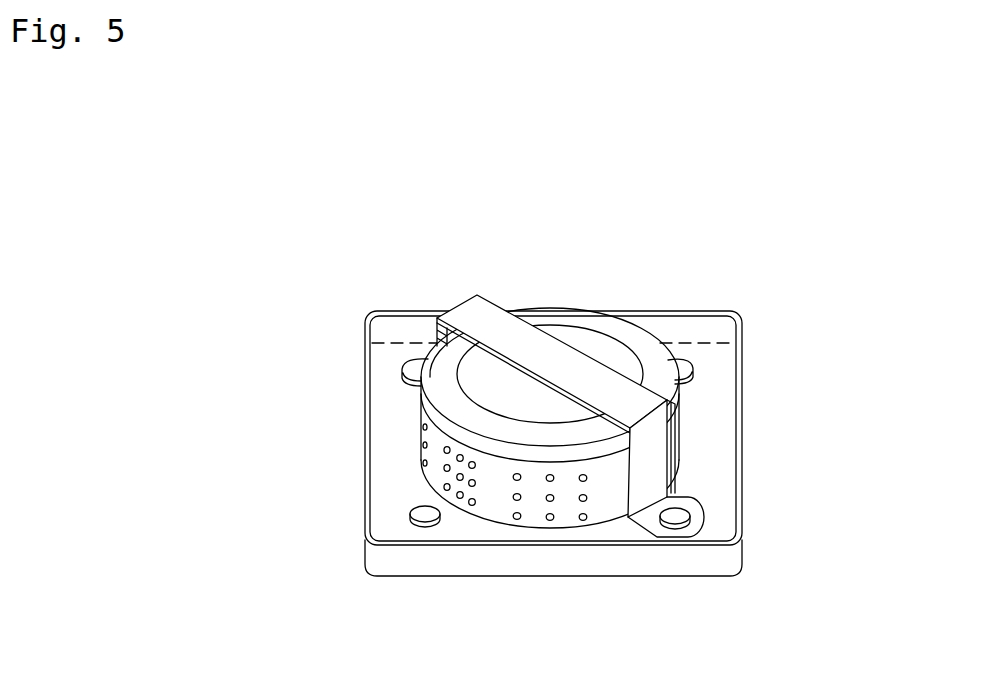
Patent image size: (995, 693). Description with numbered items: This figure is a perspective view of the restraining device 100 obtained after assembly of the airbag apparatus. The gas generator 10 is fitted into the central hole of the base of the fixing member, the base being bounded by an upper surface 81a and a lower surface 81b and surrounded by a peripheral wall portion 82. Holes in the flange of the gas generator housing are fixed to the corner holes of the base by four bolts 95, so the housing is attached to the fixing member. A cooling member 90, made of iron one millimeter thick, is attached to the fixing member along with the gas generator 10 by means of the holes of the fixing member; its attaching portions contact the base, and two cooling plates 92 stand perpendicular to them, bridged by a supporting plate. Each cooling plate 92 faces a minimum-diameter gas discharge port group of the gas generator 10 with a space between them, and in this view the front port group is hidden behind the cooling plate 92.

The restraining device 100 is at (559, 424).
The gas generator 10 is at (410, 407).
The cooling member 90 is at (492, 318).
The cooling plate 92 is at (656, 451).
The bolt 95 is at (676, 510).
The upper surface 81a is at (704, 327).
The lower surface 81b is at (581, 578).
The peripheral wall portion 82 is at (602, 449).